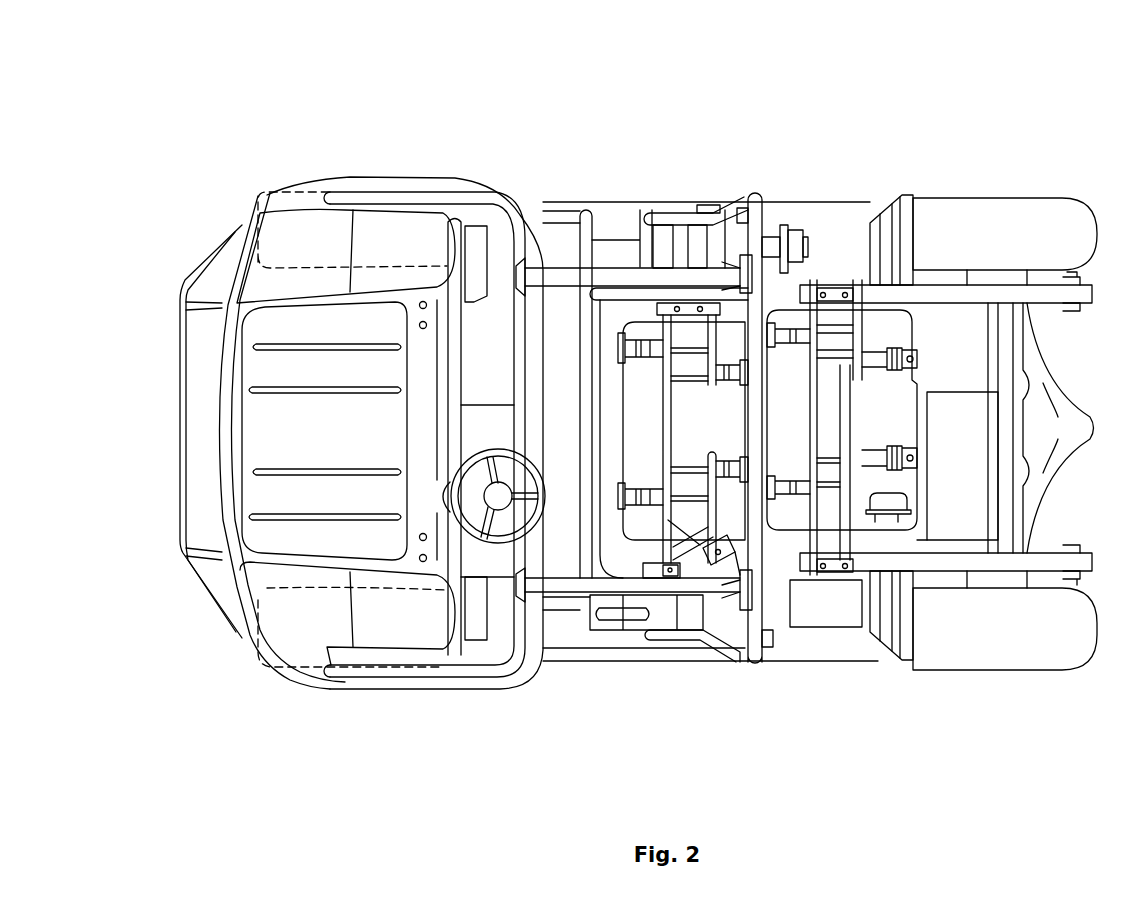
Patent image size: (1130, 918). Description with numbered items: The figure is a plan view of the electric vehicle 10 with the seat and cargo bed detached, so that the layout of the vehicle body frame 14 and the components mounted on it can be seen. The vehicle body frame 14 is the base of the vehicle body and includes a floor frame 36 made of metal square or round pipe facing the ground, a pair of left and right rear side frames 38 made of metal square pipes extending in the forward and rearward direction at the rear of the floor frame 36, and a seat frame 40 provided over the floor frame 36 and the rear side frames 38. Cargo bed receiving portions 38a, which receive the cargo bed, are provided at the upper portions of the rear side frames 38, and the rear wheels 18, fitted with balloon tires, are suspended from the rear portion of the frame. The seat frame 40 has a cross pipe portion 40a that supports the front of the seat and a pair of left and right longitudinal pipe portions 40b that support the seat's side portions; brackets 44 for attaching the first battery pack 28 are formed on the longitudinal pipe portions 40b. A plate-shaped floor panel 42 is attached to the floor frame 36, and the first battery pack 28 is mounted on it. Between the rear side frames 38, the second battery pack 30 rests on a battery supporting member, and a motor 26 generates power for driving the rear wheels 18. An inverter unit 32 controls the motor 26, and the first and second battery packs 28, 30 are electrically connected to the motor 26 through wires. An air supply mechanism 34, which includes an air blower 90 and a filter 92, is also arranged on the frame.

The electric vehicle 10 is at (395, 145).
The vehicle body frame 14 is at (674, 661).
The rear wheels 18 is at (1082, 193).
The motor 26 is at (954, 507).
The first battery pack 28 is at (507, 647).
The second battery pack 30 is at (790, 537).
The inverter unit 32 is at (832, 608).
The air supply mechanism 34 is at (768, 190).
The floor frame 36 is at (603, 652).
The rear side frames 38 is at (1044, 290).
The cargo bed receiving portions 38a is at (987, 300).
The seat frame 40 is at (630, 282).
The cross pipe portion 40a is at (578, 345).
The longitudinal pipe portions 40b is at (619, 298).
The floor panel 42 is at (545, 620).
The brackets 44 is at (693, 303).
The air blower 90 is at (731, 245).
The filter 92 is at (800, 222).